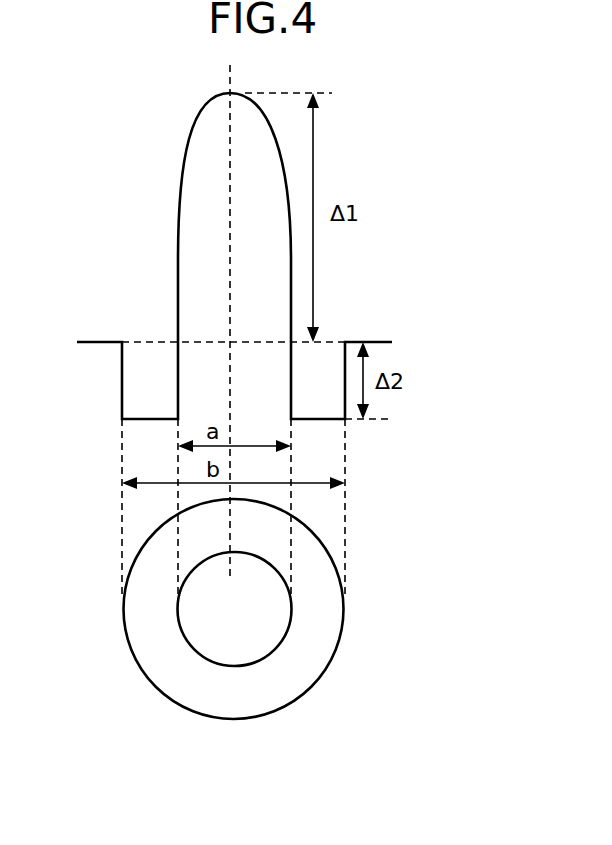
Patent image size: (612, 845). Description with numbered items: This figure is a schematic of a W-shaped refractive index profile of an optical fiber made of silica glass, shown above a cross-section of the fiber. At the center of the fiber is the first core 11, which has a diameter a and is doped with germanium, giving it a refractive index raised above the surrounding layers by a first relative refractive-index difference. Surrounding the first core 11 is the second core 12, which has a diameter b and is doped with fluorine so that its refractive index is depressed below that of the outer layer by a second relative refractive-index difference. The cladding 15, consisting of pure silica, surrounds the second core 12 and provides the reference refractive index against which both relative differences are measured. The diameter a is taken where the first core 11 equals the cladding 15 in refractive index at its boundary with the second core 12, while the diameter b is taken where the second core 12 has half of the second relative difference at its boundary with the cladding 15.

The first core 11 is at (262, 639).
The second core 12 is at (317, 648).
The cladding 15 is at (346, 617).